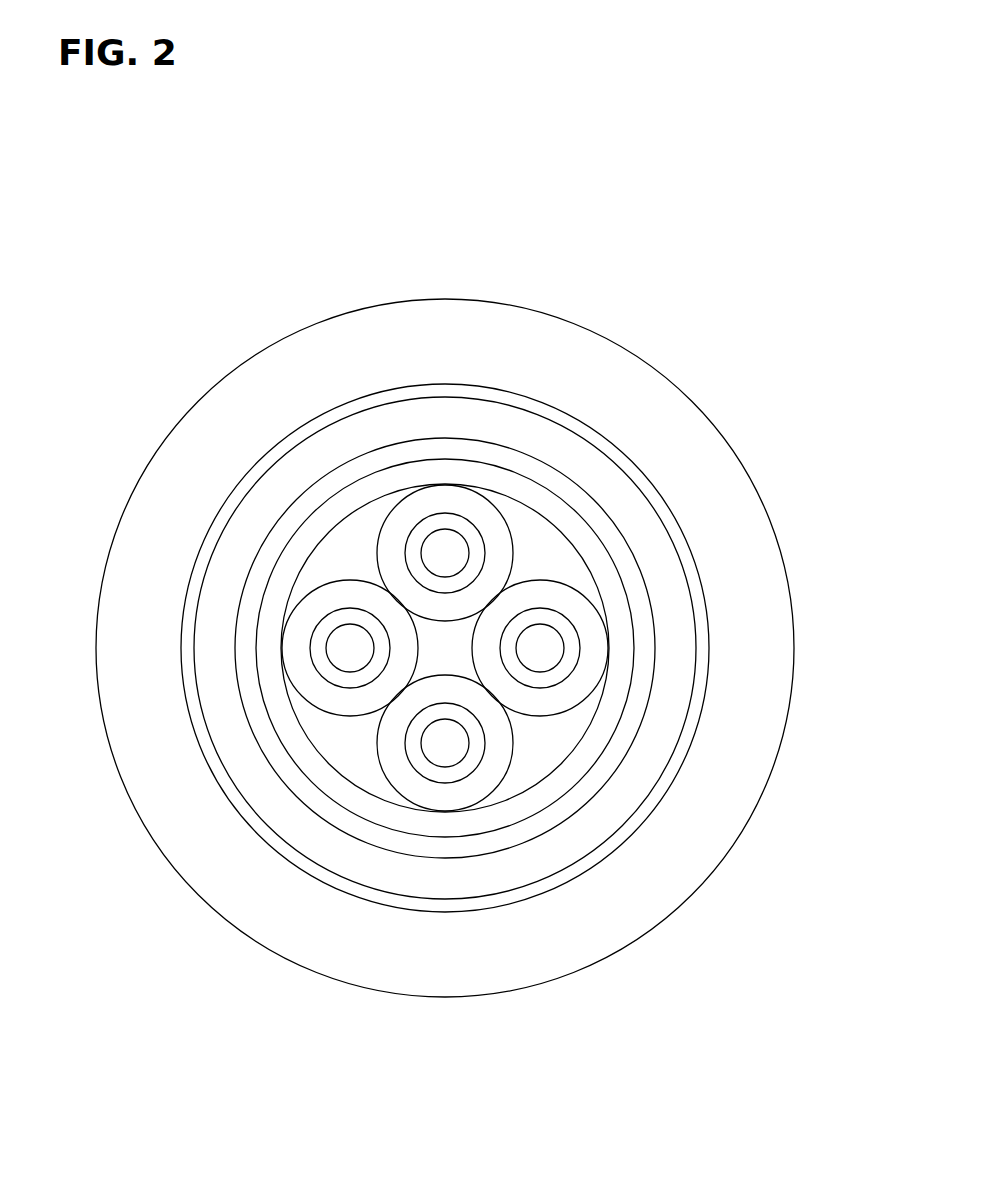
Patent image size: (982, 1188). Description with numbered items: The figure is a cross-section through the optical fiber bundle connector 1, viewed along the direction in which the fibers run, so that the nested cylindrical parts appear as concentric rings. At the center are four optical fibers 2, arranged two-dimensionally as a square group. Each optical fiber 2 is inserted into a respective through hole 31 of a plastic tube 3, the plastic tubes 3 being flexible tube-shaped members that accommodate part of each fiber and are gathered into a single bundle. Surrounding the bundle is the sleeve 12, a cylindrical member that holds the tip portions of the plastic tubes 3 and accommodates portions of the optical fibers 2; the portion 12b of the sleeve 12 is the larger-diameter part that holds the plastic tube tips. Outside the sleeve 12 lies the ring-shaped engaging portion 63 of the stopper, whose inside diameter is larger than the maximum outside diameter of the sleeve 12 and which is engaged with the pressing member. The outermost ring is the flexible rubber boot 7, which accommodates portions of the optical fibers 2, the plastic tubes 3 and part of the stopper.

The optical fiber bundle connector 1 is at (694, 236).
The optical fiber 2 is at (445, 553).
The plastic tube 3 is at (410, 515).
The through hole 31 is at (558, 619).
The rubber boot 7 is at (716, 423).
The engaging portion 63 is at (663, 560).
The sleeve 12 is at (618, 628).
The portion of sleeve 12b is at (612, 695).